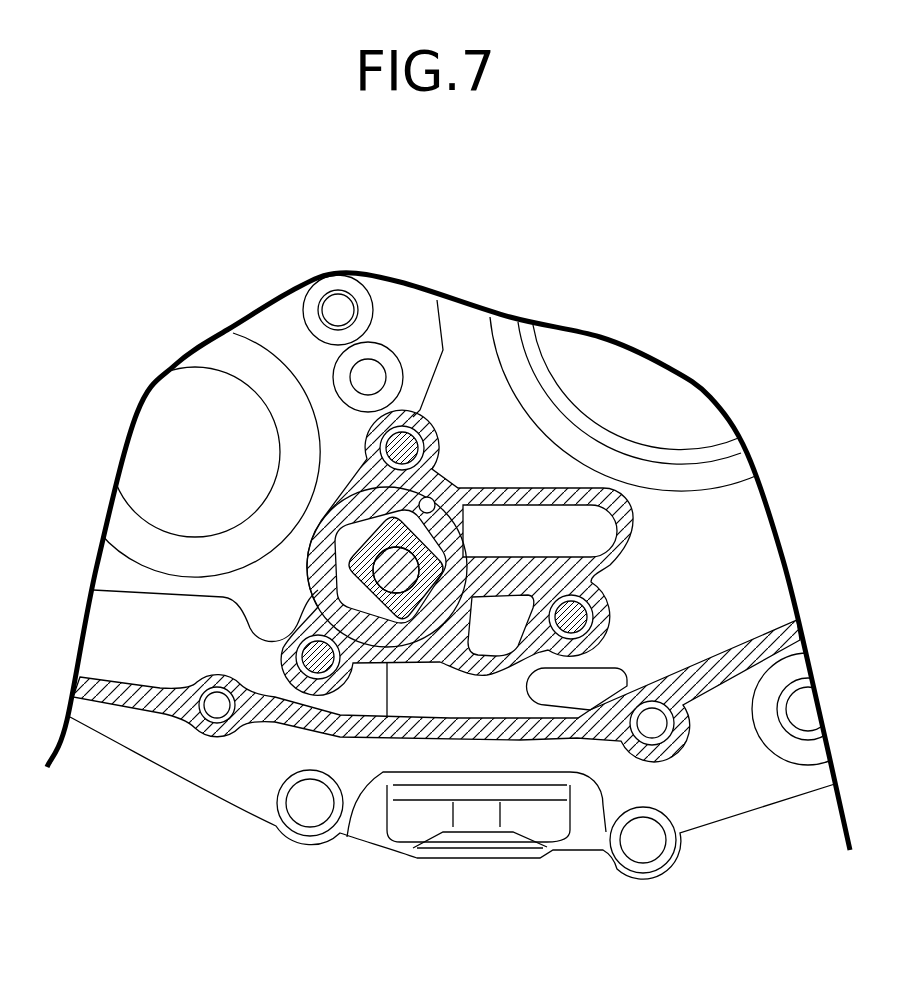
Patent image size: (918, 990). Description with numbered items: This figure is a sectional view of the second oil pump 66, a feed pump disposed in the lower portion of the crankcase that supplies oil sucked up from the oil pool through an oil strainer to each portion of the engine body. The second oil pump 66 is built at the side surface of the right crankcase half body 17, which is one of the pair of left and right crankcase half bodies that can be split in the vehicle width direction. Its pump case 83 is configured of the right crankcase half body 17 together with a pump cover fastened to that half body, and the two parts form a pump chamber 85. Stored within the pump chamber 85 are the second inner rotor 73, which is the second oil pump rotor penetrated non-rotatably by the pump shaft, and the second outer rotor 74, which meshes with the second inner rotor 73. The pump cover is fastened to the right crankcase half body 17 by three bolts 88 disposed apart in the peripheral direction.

The right crankcase half body 17 is at (133, 693).
The second oil pump 66 is at (298, 511).
The second inner rotor 73 is at (463, 590).
The second outer rotor 74 is at (320, 580).
The pump case 83 is at (531, 486).
The pump chamber 85 is at (430, 508).
The bolt 88 is at (403, 450).